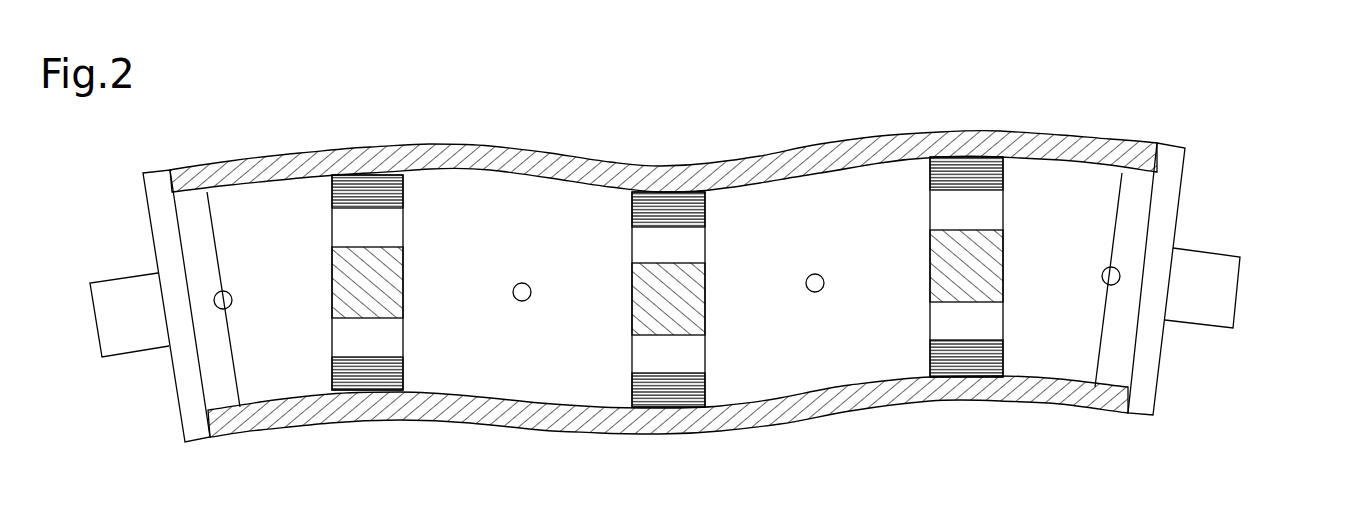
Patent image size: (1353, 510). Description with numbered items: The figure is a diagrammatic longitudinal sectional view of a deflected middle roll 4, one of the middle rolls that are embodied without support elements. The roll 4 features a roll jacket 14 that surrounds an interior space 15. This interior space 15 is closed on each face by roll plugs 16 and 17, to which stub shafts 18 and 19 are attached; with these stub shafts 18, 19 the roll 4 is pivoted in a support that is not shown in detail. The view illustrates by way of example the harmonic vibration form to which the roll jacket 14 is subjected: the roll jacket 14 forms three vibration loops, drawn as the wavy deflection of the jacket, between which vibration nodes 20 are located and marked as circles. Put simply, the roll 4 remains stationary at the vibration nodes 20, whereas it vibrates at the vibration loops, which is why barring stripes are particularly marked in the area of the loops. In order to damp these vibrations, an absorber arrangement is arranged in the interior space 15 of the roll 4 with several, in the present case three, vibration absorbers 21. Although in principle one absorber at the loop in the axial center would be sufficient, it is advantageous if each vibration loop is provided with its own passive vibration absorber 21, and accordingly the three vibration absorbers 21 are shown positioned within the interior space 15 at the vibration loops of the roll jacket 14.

The middle roll 4 is at (212, 124).
The roll jacket 14 is at (542, 170).
The interior space 15 is at (582, 220).
The roll plug 16 is at (158, 215).
The roll plug 17 is at (1170, 190).
The stub shaft 18 is at (138, 330).
The stub shaft 19 is at (1222, 312).
The vibration node 20 is at (523, 301).
The vibration absorber 21 is at (418, 253).